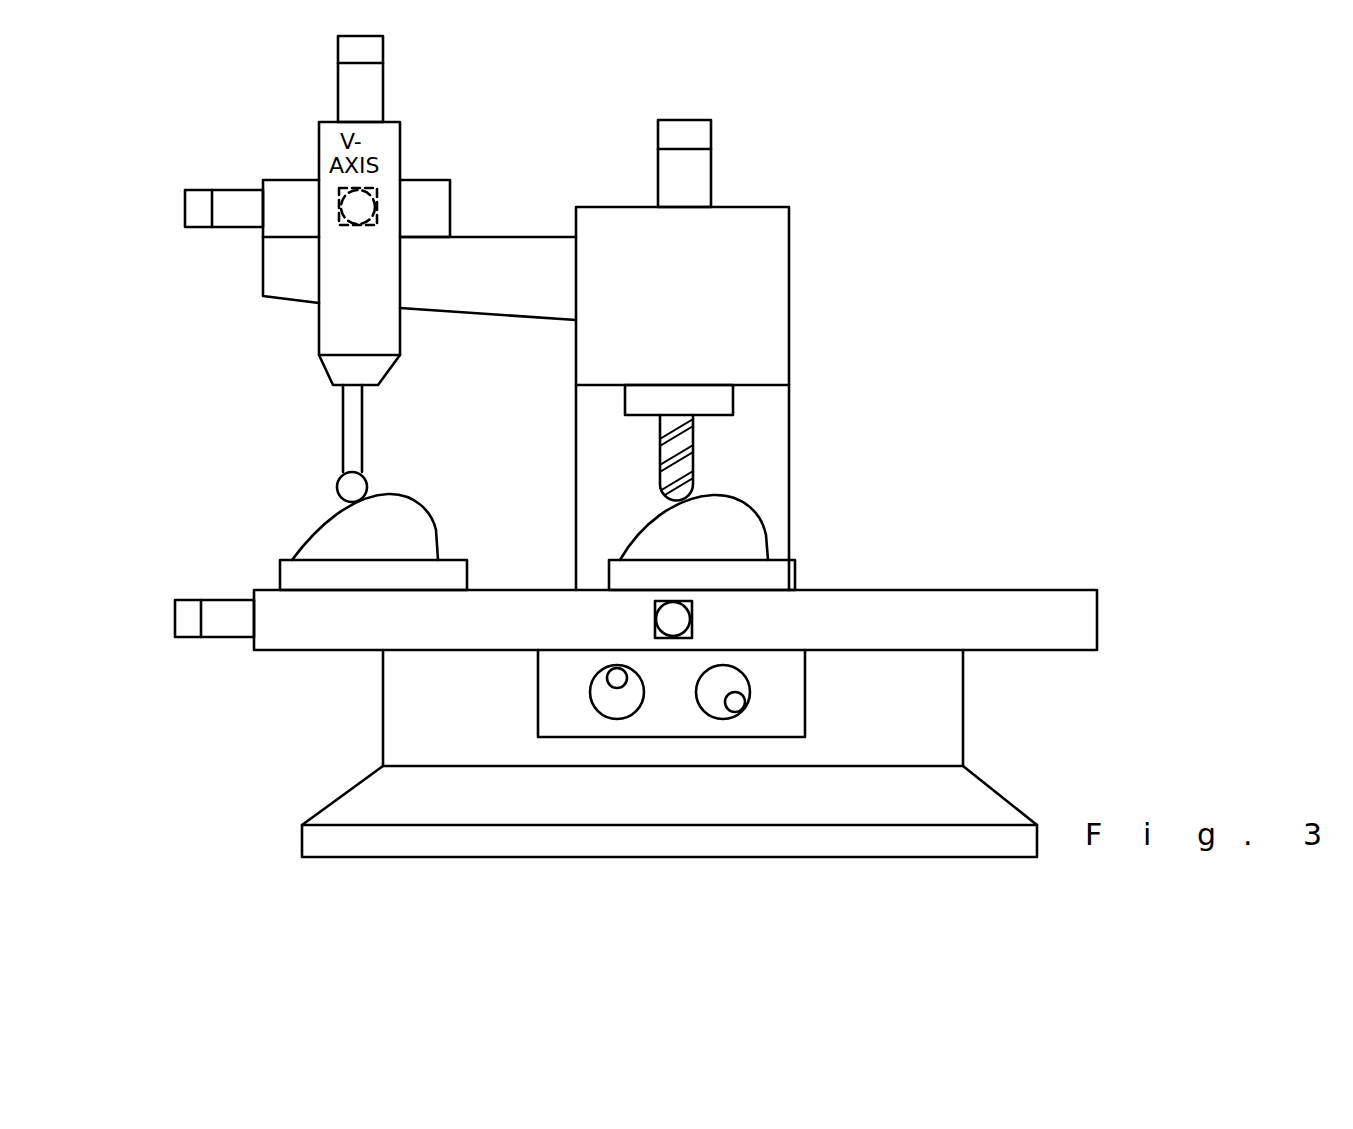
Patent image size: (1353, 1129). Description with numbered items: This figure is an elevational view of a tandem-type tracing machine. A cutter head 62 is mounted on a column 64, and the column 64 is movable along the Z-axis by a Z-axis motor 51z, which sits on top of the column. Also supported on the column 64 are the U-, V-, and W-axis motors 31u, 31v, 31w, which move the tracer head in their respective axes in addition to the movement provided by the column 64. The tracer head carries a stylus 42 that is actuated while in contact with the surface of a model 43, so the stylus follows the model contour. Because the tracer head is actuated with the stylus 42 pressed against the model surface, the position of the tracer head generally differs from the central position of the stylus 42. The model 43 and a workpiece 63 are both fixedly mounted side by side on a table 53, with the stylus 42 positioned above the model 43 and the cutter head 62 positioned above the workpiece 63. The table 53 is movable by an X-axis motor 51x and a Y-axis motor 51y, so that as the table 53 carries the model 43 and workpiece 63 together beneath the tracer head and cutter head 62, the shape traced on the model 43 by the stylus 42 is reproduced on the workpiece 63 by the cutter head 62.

The U-axis motor 31u is at (200, 190).
The V-axis motor 31v is at (377, 207).
The W-axis motor 31w is at (383, 77).
The stylus 42 is at (362, 436).
The model 43 is at (437, 528).
The X-axis motor 51x is at (226, 626).
The Y-axis motor 51y is at (655, 620).
The Z-axis motor 51z is at (711, 133).
The table 53 is at (973, 590).
The cutter head 62 is at (693, 458).
The workpiece 63 is at (762, 520).
The column 64 is at (789, 320).